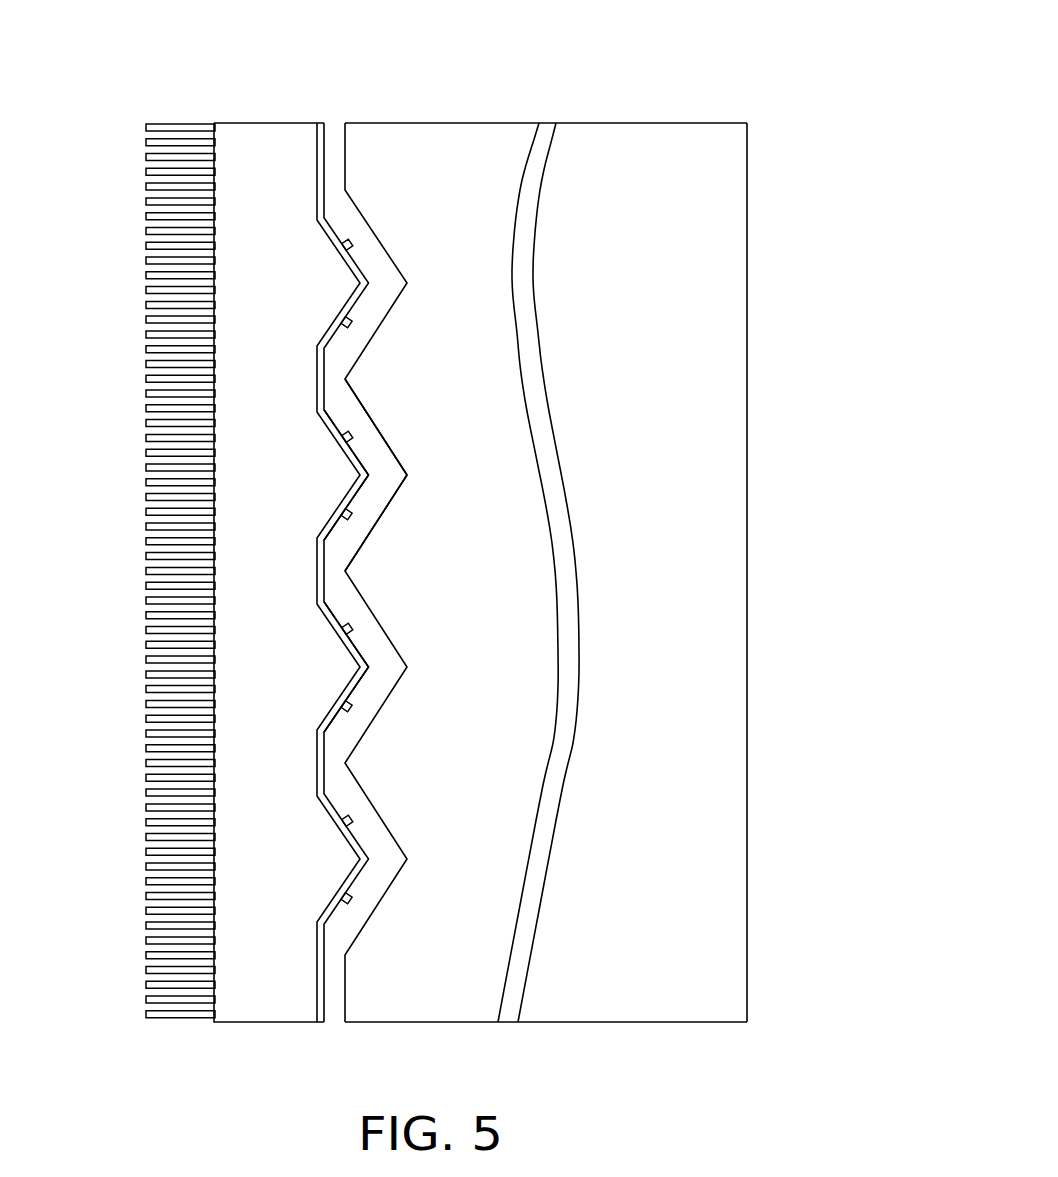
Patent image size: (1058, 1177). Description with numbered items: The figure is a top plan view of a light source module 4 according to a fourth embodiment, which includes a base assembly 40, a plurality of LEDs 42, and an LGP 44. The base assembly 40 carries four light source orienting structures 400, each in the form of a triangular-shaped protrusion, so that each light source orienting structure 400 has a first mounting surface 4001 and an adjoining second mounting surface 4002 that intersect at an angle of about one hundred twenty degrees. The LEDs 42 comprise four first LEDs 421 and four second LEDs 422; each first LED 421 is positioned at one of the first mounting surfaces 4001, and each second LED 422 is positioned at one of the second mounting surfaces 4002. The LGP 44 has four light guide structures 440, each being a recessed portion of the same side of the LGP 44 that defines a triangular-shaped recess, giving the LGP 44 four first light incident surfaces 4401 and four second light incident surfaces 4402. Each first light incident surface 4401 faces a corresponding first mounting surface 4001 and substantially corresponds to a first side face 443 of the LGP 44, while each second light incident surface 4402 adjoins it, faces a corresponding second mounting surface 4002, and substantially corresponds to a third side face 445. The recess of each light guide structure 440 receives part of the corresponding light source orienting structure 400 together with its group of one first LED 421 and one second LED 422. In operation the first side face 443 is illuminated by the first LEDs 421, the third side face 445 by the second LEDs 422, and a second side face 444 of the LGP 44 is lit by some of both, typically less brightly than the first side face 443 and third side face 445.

The light source module 4 is at (278, 55).
The base assembly 40 is at (273, 130).
The LEDs 42 is at (78, 228).
The first LED 421 is at (343, 248).
The second LED 422 is at (342, 322).
The LGP 44 is at (597, 579).
The light source orienting structure 400 is at (340, 672).
The first mounting surface 4001 is at (336, 447).
The second mounting surface 4002 is at (336, 508).
The light guide structure 440 is at (410, 655).
The first light incident surface 4401 is at (378, 430).
The second light incident surface 4402 is at (388, 513).
The first side face 443 is at (676, 122).
The second side face 444 is at (749, 868).
The third side face 445 is at (667, 1026).